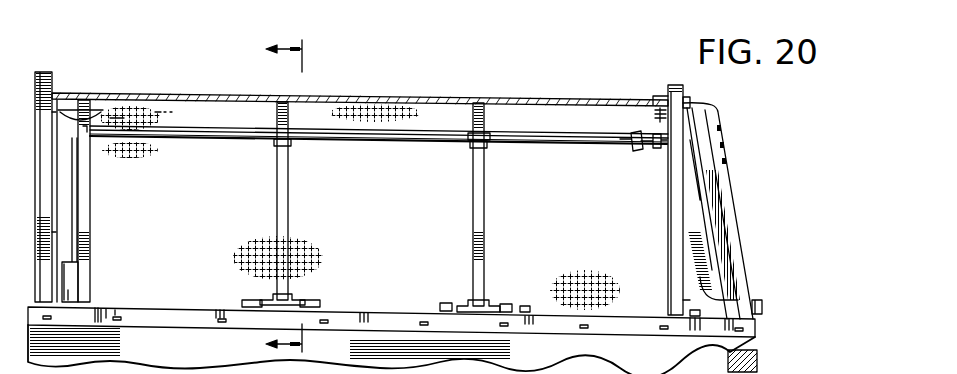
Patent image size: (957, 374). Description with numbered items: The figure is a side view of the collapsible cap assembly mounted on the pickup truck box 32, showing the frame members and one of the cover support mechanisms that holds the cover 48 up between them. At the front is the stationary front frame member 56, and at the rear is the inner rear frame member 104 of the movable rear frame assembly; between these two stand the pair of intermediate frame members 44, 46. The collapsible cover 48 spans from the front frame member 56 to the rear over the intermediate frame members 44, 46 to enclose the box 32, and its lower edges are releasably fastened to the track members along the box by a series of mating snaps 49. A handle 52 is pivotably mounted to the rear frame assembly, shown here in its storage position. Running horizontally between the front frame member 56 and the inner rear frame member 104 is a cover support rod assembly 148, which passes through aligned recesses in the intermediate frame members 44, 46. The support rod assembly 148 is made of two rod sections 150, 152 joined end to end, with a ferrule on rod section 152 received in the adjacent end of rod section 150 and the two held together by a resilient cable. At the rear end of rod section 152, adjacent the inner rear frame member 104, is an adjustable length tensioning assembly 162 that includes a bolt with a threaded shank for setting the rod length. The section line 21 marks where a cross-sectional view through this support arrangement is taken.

The section line 21- 21 is at (271, 197).
The box 32 is at (418, 77).
The intermediate frame assembly 44 is at (290, 215).
The intermediate frame assembly 46 is at (487, 214).
The collapsible cover 48 is at (237, 93).
The mating snaps 49 is at (45, 318).
The handle 52 is at (693, 172).
The front frame member 56 is at (88, 106).
The inner rear frame member 104 is at (666, 200).
The cover support rod assembly 148 is at (497, 130).
The rod section 150 is at (302, 128).
The rod section 152 is at (416, 137).
The adjustable length tensioning assembly 162 is at (635, 121).